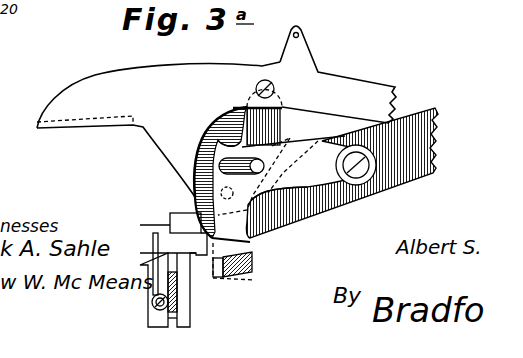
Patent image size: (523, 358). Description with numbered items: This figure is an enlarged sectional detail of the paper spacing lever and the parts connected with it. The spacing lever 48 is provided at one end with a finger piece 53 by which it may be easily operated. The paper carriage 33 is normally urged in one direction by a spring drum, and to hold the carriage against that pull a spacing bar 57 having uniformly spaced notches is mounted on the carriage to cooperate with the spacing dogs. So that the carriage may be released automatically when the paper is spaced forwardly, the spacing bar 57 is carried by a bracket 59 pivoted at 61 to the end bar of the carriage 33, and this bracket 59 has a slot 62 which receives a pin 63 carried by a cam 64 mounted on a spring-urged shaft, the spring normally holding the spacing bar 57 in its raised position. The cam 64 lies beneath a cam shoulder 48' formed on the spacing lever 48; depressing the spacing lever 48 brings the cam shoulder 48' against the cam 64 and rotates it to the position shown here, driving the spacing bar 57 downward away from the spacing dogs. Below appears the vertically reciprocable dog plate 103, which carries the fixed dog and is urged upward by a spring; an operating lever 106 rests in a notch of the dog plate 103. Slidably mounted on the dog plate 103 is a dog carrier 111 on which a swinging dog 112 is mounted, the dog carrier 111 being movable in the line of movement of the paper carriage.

The paper carriage 33 is at (422, 143).
The spacing lever 48 is at (321, 74).
The cam shoulder 48' is at (200, 146).
The finger piece 53 is at (57, 128).
The spacing bar 57 is at (254, 264).
The bracket 59 is at (293, 181).
The pivot 61 is at (355, 178).
The slot 62 is at (198, 148).
The pin 63 is at (262, 161).
The cam 64 is at (217, 127).
The dog plate 103 is at (180, 294).
The operating lever 106 is at (187, 216).
The dog carrier 111 is at (155, 313).
The swinging dog 112 is at (199, 257).